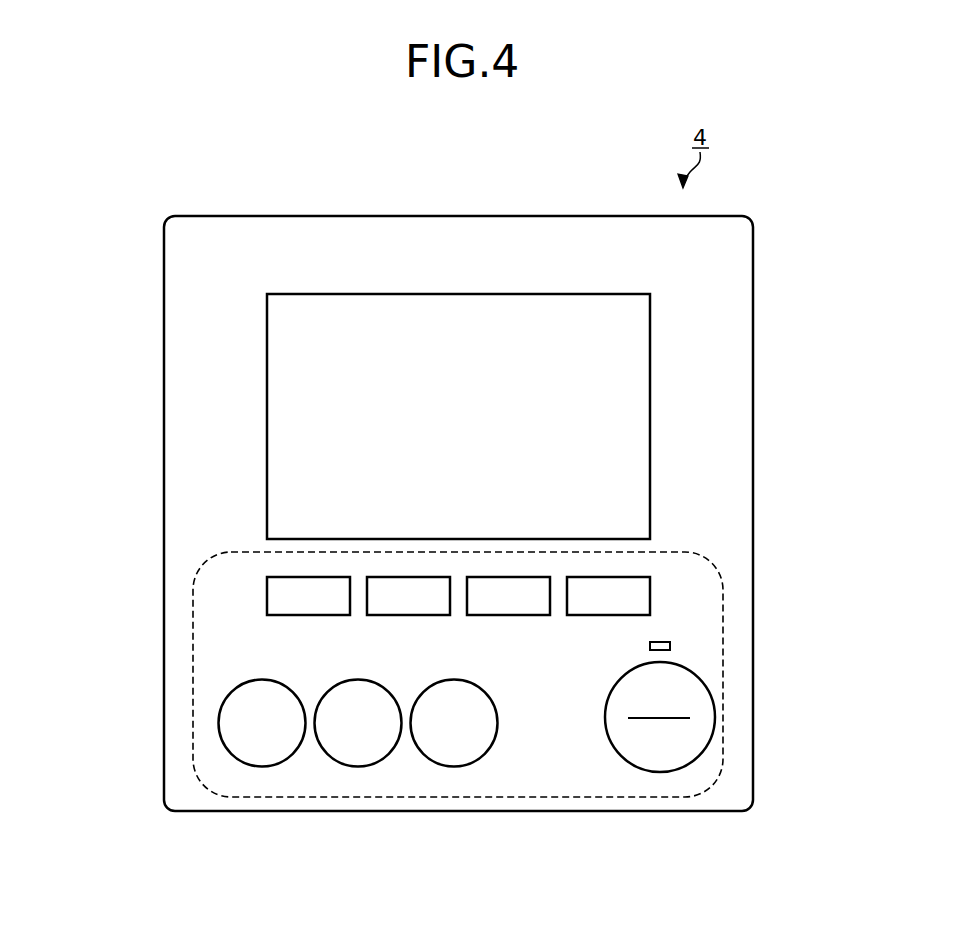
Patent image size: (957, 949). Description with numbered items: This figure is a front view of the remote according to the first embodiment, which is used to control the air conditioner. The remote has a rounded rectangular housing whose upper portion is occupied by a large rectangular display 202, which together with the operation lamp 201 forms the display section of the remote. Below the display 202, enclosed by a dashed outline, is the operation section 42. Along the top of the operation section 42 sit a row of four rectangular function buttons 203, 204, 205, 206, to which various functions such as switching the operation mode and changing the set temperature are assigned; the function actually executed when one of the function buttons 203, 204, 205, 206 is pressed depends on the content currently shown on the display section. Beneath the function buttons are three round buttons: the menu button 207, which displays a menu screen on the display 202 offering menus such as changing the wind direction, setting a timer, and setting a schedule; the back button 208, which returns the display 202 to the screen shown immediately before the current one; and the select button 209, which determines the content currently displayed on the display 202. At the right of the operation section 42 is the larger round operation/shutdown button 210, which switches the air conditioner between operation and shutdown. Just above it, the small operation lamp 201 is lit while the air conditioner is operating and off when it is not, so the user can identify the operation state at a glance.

The operation section 42 is at (700, 628).
The operation lamp 201 is at (670, 646).
The display 202 is at (633, 427).
The function button 203 is at (275, 598).
The function button 204 is at (403, 582).
The function button 205 is at (515, 583).
The function button 206 is at (643, 598).
The menu button 207 is at (265, 757).
The back button 208 is at (363, 757).
The select button 209 is at (455, 757).
The operation/shutdown button 210 is at (658, 765).